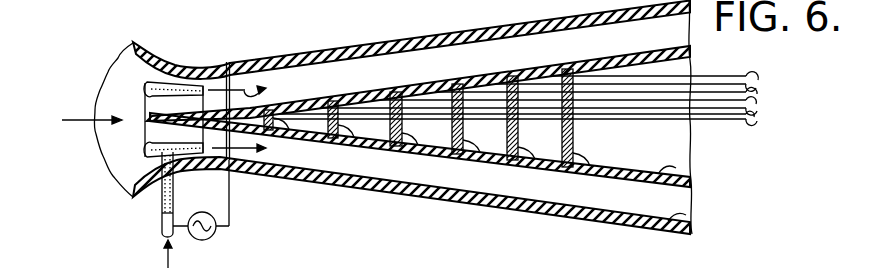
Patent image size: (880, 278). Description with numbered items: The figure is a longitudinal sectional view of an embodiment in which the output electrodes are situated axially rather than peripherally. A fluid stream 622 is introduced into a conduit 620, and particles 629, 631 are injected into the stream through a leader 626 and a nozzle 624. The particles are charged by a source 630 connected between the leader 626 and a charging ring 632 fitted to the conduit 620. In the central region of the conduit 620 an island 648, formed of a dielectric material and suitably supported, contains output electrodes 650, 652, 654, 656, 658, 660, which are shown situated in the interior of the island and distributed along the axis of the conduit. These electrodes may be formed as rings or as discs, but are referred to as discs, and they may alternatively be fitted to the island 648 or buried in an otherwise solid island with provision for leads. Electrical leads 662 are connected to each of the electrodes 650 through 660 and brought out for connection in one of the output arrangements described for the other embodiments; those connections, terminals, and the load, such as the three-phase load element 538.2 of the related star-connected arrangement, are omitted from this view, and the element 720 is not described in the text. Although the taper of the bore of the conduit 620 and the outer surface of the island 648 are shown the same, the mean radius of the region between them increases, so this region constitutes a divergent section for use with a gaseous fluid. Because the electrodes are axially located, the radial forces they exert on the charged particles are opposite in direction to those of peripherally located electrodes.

The conduit 620 is at (693, 219).
The fluid stream 622 is at (90, 118).
The nozzle 624 is at (163, 78).
The leader 626 is at (162, 233).
The particles 629 is at (172, 256).
The source 630 is at (215, 234).
The particles 631 is at (252, 190).
The charging ring 632 is at (229, 63).
The island 648 is at (688, 168).
The output electrode 650 is at (285, 137).
The output electrode 652 is at (358, 150).
The output electrode 654 is at (417, 157).
The output electrode 656 is at (474, 160).
The output electrode 658 is at (533, 172).
The output electrode 660 is at (586, 180).
The electrical leads 662 is at (765, 92).
The three-phase load 538.2 is at (482, 8).
The lower element 720 is at (665, 272).